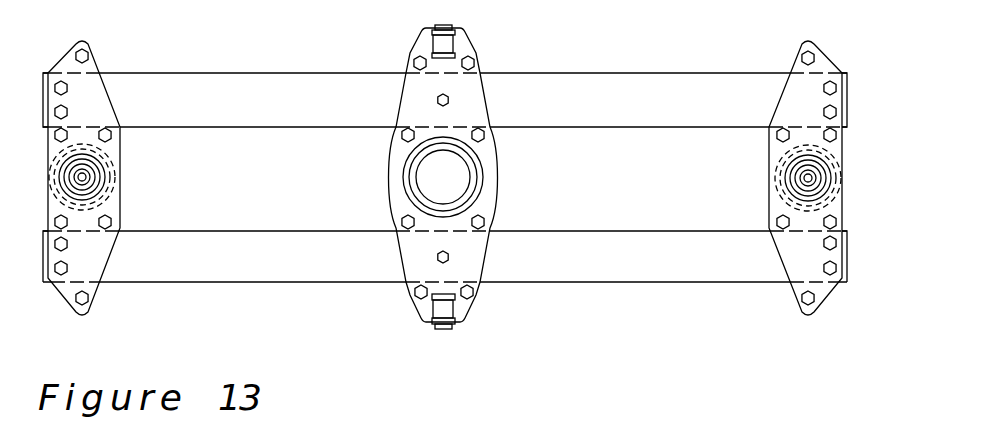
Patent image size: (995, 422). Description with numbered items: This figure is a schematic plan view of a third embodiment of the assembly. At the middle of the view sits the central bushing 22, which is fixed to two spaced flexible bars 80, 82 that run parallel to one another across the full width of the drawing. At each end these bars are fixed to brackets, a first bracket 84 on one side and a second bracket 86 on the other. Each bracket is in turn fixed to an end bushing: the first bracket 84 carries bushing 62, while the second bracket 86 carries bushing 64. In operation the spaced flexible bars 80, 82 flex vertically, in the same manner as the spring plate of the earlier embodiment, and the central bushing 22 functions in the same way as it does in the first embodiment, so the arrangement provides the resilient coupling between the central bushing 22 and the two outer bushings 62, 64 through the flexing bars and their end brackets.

The central bushing 22 is at (474, 171).
The bushing 62 is at (102, 173).
The bushing 64 is at (837, 177).
The flexible bar 80 is at (293, 85).
The flexible bar 82 is at (256, 273).
The bracket 84 is at (95, 94).
The bracket 86 is at (823, 70).